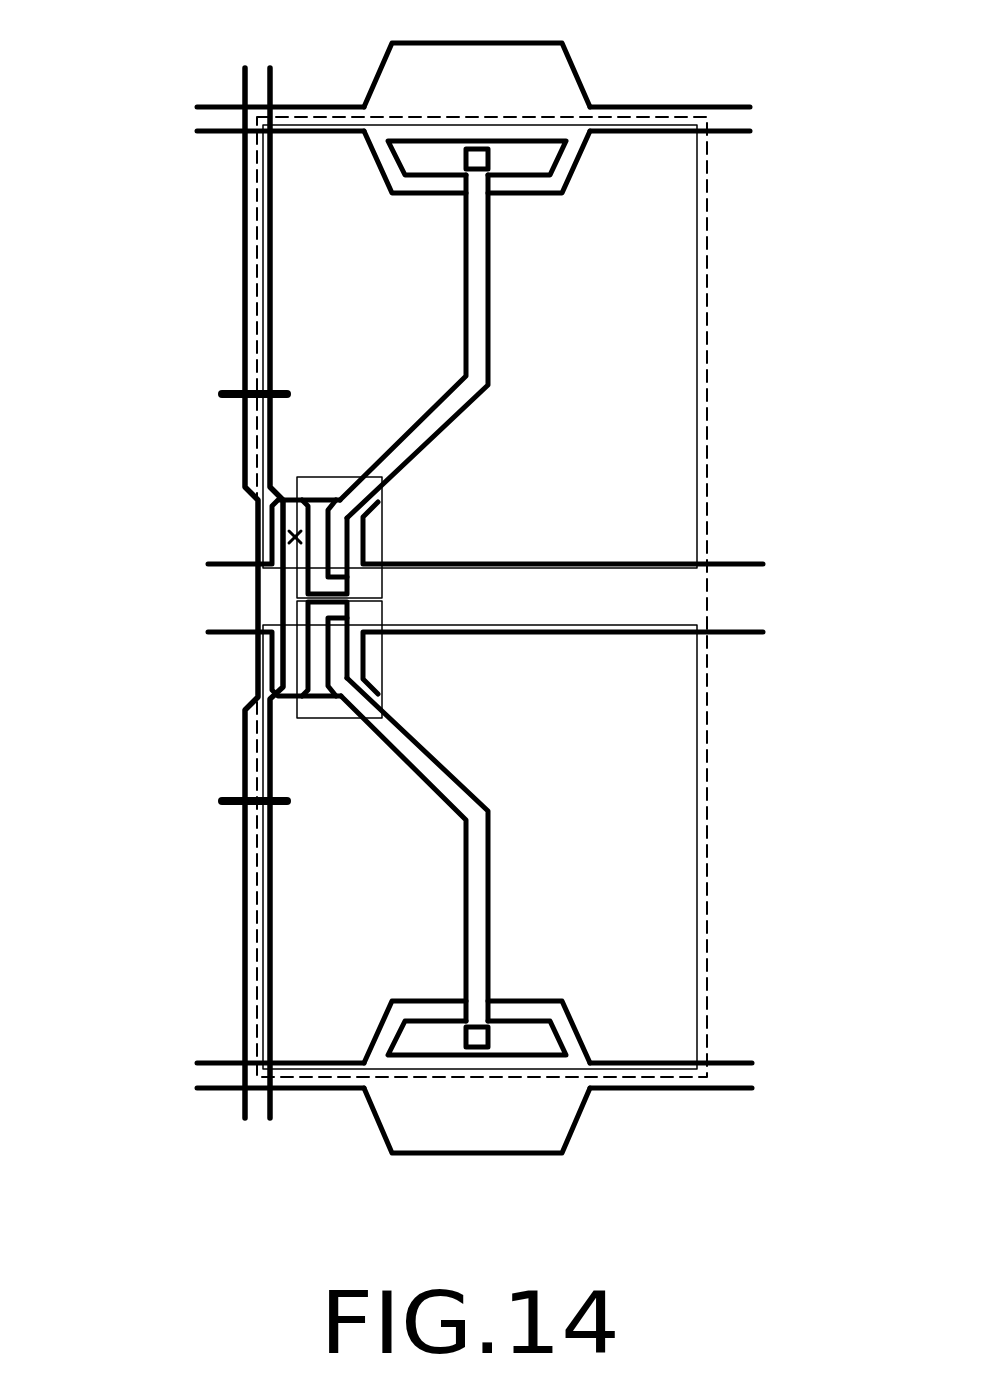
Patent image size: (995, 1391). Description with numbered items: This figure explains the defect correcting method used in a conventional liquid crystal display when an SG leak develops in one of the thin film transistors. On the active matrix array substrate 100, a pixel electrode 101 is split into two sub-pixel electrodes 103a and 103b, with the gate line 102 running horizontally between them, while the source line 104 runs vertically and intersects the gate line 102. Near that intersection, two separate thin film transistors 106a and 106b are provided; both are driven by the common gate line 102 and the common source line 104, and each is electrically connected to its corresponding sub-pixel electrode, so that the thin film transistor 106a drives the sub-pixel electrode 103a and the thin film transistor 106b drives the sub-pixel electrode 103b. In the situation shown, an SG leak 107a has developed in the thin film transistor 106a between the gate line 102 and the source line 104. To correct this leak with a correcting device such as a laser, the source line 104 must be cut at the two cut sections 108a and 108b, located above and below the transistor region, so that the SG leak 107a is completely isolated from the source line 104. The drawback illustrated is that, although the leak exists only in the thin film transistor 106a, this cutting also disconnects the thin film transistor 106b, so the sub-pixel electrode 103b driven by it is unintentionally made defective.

The active matrix array substrate 100 is at (175, 45).
The pixel electrode 101 is at (707, 271).
The gate line 102 is at (748, 562).
The sub-pixel electrode 103a is at (687, 370).
The sub-pixel electrode 103b is at (687, 838).
The source line 104 is at (228, 207).
The thin film transistor 106a is at (386, 519).
The thin film transistor 106b is at (386, 690).
The SG leak 107a is at (291, 537).
The cut section 108a is at (225, 394).
The cut section 108b is at (225, 801).